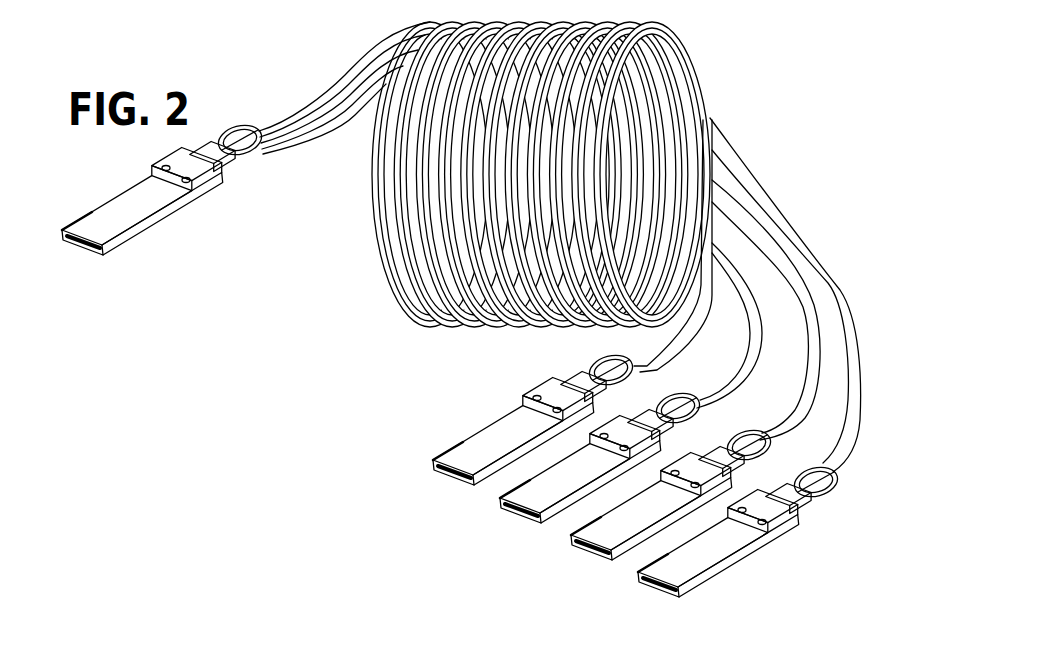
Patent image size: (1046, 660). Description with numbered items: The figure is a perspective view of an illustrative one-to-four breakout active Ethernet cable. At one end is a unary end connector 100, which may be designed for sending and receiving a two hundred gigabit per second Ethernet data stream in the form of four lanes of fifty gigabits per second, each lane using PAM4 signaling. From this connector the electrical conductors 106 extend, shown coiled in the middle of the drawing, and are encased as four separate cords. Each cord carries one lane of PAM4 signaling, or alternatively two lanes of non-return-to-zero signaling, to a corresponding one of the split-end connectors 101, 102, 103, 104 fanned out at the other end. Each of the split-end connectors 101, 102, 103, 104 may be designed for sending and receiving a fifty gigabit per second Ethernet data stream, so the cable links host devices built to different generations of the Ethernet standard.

The unary end connector 100 is at (133, 238).
The split-end connector 101 is at (442, 472).
The split-end connector 102 is at (515, 517).
The split-end connector 103 is at (593, 555).
The split-end connector 104 is at (658, 592).
The electrical conductors 106 is at (397, 383).